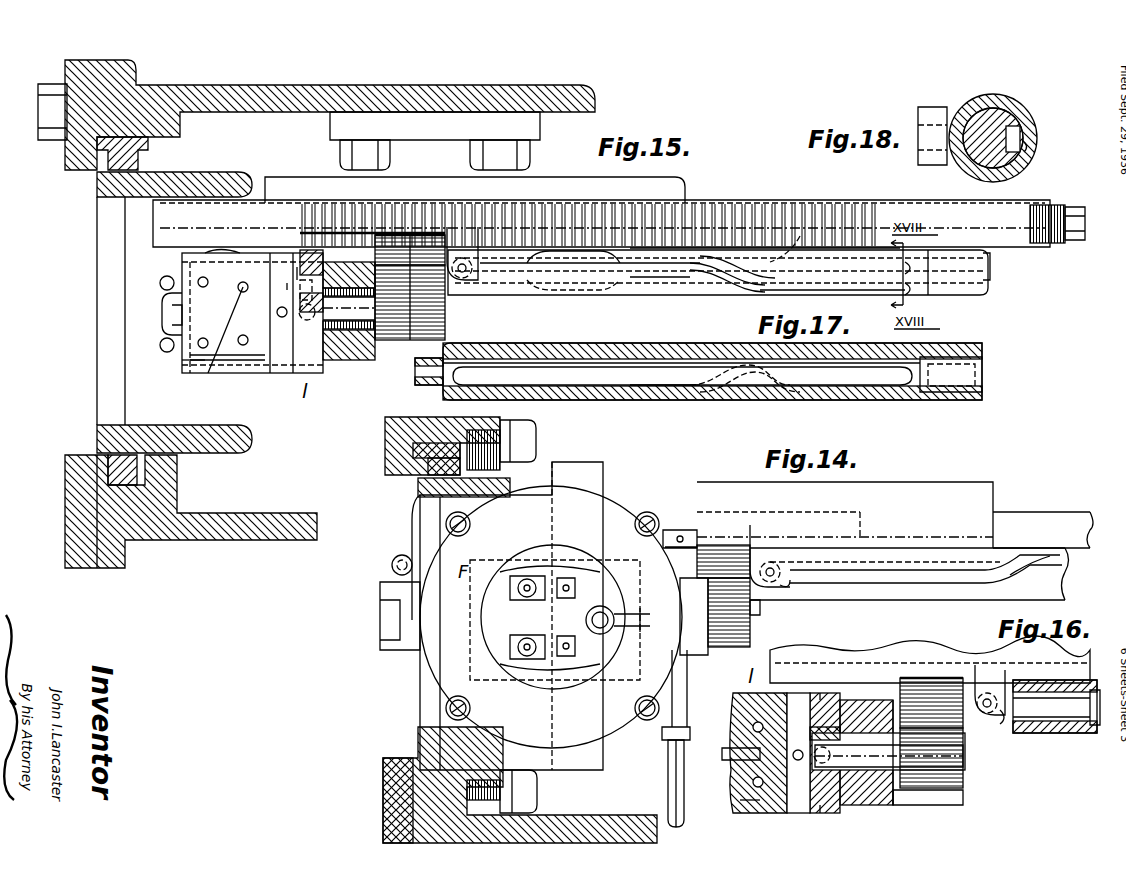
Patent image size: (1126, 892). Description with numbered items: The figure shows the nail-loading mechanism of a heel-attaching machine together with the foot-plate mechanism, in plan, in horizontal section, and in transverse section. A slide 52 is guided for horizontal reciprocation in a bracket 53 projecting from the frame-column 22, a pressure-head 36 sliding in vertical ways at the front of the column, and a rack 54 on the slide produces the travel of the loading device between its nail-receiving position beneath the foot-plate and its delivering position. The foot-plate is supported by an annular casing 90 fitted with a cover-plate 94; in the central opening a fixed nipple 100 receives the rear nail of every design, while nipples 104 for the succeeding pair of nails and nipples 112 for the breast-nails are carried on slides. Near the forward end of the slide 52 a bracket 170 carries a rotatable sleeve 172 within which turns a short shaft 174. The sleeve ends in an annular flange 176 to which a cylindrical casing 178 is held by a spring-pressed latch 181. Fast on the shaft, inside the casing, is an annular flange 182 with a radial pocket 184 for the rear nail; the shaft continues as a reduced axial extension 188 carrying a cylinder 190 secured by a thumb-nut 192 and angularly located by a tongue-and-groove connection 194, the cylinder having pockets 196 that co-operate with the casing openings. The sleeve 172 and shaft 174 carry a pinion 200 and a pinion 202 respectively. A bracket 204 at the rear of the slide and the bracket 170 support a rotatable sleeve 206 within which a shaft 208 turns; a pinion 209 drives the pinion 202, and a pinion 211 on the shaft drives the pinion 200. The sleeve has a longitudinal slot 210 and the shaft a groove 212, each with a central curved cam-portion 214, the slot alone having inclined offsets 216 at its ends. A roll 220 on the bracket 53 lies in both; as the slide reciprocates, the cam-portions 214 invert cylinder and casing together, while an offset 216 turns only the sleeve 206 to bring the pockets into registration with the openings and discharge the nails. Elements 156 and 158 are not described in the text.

In FIG. 15, the frame-column 22 is at (153, 88).
In FIG. 14, the frame-column 22 is at (490, 422).
In FIG. 15, the pressure-head 36 is at (96, 183).
In FIG. 14, the pressure-head 36 is at (420, 740).
In FIG. 15, the slide 52 is at (987, 213).
In FIG. 14, the slide 52 is at (1028, 512).
In FIG. 15, the bracket 53 is at (552, 177).
In FIG. 14, the bracket 53 is at (987, 482).
In FIG. 15, the rack 54 is at (806, 222).
In FIG. 14, the annular casing 90 is at (617, 503).
In FIG. 14, the cover-plate 94 is at (455, 655).
In FIG. 14, the nipple 100 is at (603, 606).
In FIG. 14, the nipples 104 is at (567, 578).
In FIG. 14, the nipples 112 is at (527, 578).
In FIG. 14, the bracket 156 is at (667, 719).
In FIG. 14, the rod 158 is at (667, 792).
In FIG. 15, the bracket 170 is at (362, 352).
In FIG. 16, the bracket 170 is at (876, 800).
In FIG. 15, the sleeve 172 is at (400, 355).
In FIG. 16, the sleeve 172 is at (868, 727).
In FIG. 15, the short shaft 174 is at (447, 306).
In FIG. 14, the short shaft 174 is at (752, 612).
In FIG. 16, the short shaft 174 is at (966, 766).
In FIG. 15, the annular flange 176 is at (303, 345).
In FIG. 16, the annular flange 176 is at (818, 813).
In FIG. 15, the cylindrical casing 178 is at (200, 375).
In FIG. 16, the cylindrical casing 178 is at (768, 813).
In FIG. 15, the spring-pressed latch 181 is at (297, 267).
In FIG. 16, the spring-pressed latch 181 is at (855, 790).
In FIG. 15, the annular flange 182 is at (307, 303).
In FIG. 16, the annular flange 182 is at (798, 748).
In FIG. 15, the radial pocket 184 is at (287, 283).
In FIG. 16, the radial pocket 184 is at (812, 737).
In FIG. 15, the reduced axial extension 188 is at (182, 278).
In FIG. 15, the cylinder 190 is at (182, 360).
In FIG. 16, the cylinder 190 is at (732, 800).
In FIG. 15, the thumb-nut 192 is at (164, 290).
In FIG. 15, the tongue-and-groove connection 194 is at (255, 372).
In FIG. 15, the pockets 196 is at (165, 340).
In FIG. 16, the pockets 196 is at (757, 727).
In FIG. 15, the pinion 200 is at (380, 336).
In FIG. 14, the pinion 200 is at (706, 660).
In FIG. 16, the pinion 200 is at (914, 790).
In FIG. 15, the pinion 202 is at (446, 327).
In FIG. 14, the pinion 202 is at (735, 645).
In FIG. 16, the pinion 202 is at (950, 787).
In FIG. 15, the bracket 204 is at (984, 291).
In FIG. 15, the sleeve 206 is at (567, 263).
In FIG. 18, the sleeve 206 is at (1022, 112).
In FIG. 17, the sleeve 206 is at (825, 395).
In FIG. 14, the sleeve 206 is at (1000, 603).
In FIG. 16, the sleeve 206 is at (1030, 735).
In FIG. 15, the shaft 208 is at (548, 262).
In FIG. 18, the shaft 208 is at (992, 112).
In FIG. 17, the shaft 208 is at (748, 386).
In FIG. 16, the shaft 208 is at (1066, 735).
In FIG. 15, the pinion 209 is at (417, 263).
In FIG. 14, the pinion 209 is at (731, 545).
In FIG. 16, the pinion 209 is at (940, 683).
In FIG. 15, the slot 210 is at (667, 279).
In FIG. 14, the slot 210 is at (893, 569).
In FIG. 15, the pinion 211 is at (387, 277).
In FIG. 14, the pinion 211 is at (700, 545).
In FIG. 16, the pinion 211 is at (913, 683).
In FIG. 15, the groove 212 is at (570, 282).
In FIG. 18, the groove 212 is at (1022, 134).
In FIG. 17, the groove 212 is at (640, 388).
In FIG. 15, the cam-portion 214 is at (700, 262).
In FIG. 17, the cam-portion 214 is at (716, 362).
In FIG. 14, the cam-portion 214 is at (1034, 571).
In FIG. 15, the offsets 216 is at (468, 284).
In FIG. 18, the offsets 216 is at (1030, 142).
In FIG. 14, the offsets 216 is at (790, 582).
In FIG. 16, the offsets 216 is at (1002, 713).
In FIG. 15, the roll 220 is at (462, 256).
In FIG. 18, the roll 220 is at (968, 112).
In FIG. 14, the roll 220 is at (778, 560).
In FIG. 16, the roll 220 is at (1000, 696).